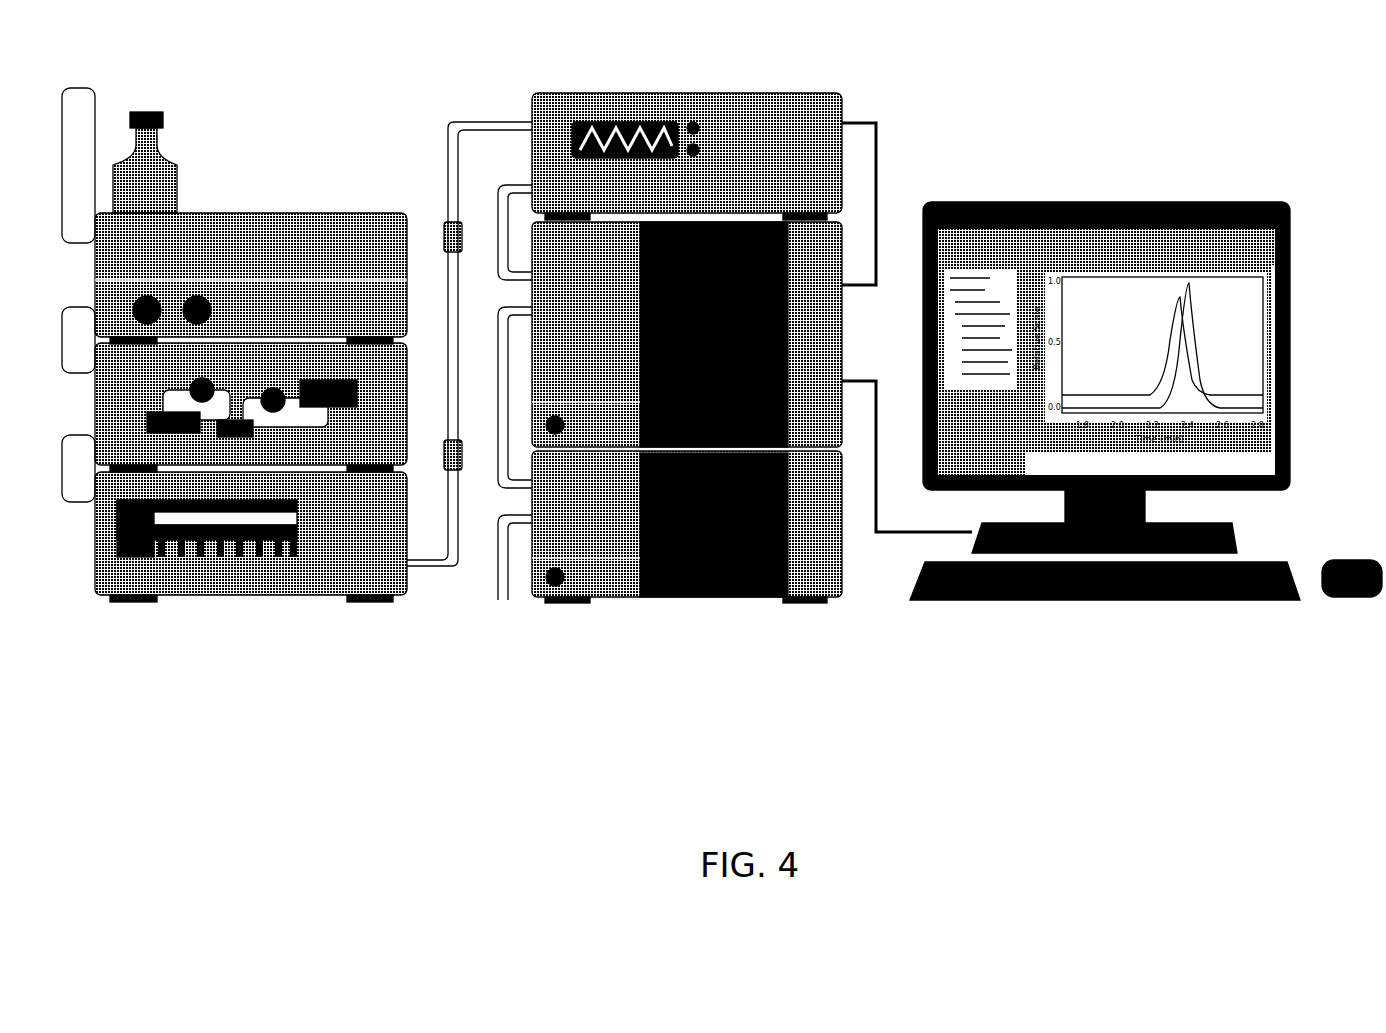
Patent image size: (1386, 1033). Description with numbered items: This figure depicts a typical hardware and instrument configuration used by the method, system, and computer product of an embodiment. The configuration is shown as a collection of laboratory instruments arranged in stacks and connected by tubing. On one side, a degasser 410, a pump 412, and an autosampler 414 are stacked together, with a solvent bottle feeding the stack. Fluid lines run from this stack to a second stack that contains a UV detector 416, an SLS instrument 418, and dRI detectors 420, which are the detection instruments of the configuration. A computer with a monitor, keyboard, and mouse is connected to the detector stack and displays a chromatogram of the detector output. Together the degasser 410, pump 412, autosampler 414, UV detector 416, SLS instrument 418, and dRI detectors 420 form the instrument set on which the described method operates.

The degasser 410 is at (100, 288).
The pump 412 is at (100, 412).
The autosampler 414 is at (100, 558).
The UV detector 416 is at (555, 87).
The SLS instrument 418 is at (543, 262).
The dRI detectors 420 is at (587, 567).